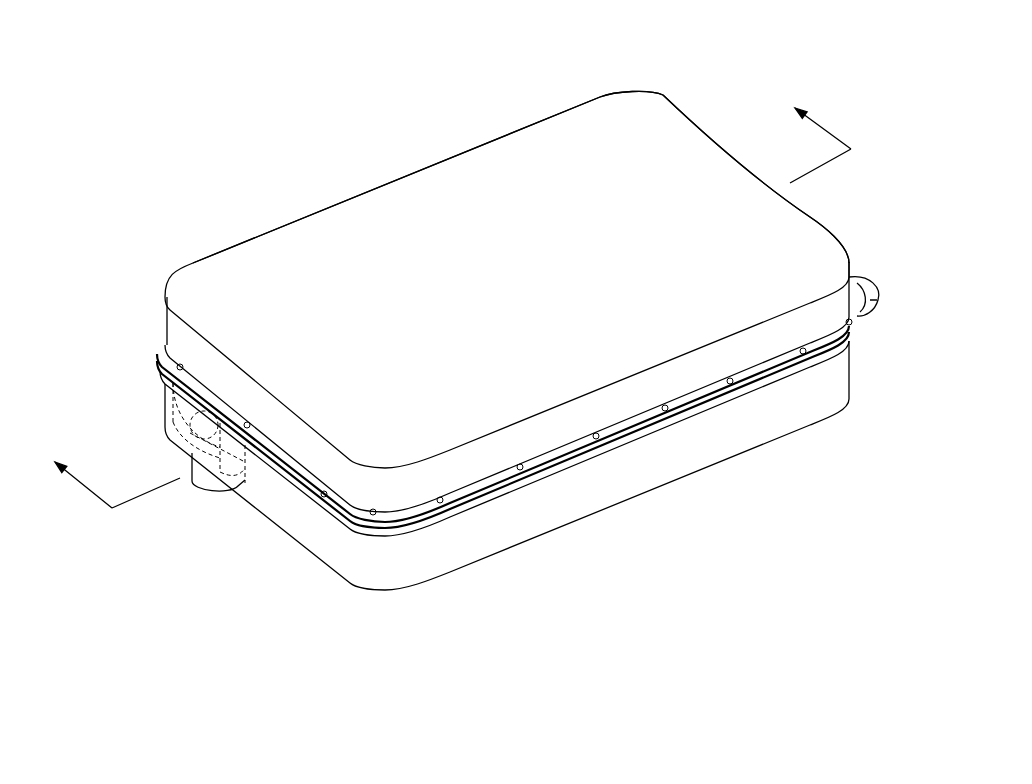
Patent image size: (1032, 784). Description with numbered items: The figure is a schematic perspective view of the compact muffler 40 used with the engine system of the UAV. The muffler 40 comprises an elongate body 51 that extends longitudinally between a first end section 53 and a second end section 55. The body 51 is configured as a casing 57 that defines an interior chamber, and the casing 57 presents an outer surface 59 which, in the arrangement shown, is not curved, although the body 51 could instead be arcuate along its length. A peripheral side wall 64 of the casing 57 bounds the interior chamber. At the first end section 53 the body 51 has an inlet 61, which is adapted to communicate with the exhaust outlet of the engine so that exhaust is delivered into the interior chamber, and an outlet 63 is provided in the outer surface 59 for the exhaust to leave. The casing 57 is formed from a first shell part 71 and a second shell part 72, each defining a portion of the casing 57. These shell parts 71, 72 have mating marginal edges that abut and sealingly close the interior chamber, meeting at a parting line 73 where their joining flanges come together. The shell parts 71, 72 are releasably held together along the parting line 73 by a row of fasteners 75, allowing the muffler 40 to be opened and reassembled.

The muffler 40 is at (279, 194).
The body 51 is at (493, 138).
The first end section 53 is at (807, 213).
The second end section 55 is at (280, 510).
The casing 57 is at (663, 96).
The outer surface 59 is at (530, 545).
The inlet 61 is at (872, 300).
The outlet 63 is at (200, 477).
The peripheral side wall 64 is at (770, 423).
The first shell part 71 is at (383, 190).
The second shell part 72 is at (733, 443).
The parting line 73 is at (413, 520).
The fasteners 75 is at (803, 353).